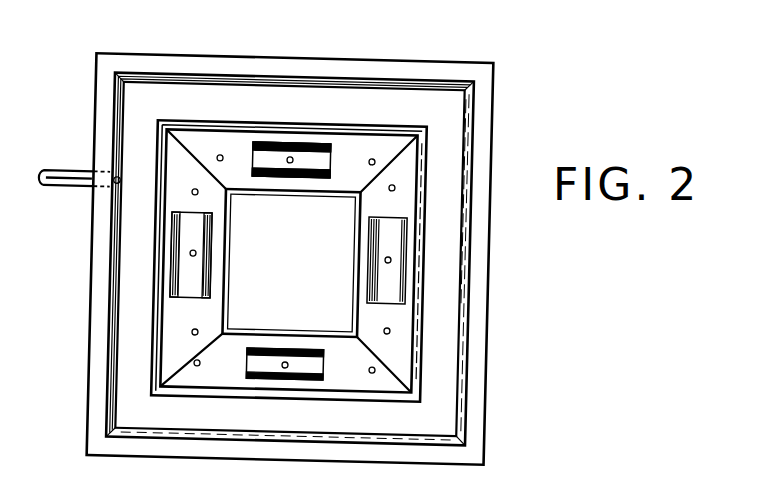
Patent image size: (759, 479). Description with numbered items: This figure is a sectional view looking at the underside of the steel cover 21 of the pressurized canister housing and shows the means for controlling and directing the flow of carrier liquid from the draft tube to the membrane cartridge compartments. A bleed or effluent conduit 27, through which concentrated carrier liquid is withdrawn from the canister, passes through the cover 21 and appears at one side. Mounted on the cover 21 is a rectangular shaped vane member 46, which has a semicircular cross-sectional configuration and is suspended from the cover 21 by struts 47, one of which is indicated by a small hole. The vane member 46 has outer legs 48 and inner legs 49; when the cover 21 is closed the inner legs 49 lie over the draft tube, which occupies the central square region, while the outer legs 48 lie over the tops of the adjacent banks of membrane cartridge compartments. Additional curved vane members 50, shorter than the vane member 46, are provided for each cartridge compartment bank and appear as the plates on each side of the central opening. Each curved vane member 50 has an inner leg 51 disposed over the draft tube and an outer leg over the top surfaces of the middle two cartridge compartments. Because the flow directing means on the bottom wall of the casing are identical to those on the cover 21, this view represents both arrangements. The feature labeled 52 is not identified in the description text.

The steel cover 21 is at (493, 111).
The bleed or effluent conduit 27 is at (50, 168).
The rectangular shaped vane member 46 is at (429, 255).
The struts 47 is at (384, 328).
The outer legs 48 is at (338, 126).
The inner legs 49 is at (320, 191).
The curved vane members 50 is at (335, 158).
The inner leg 51 is at (270, 177).
The slot 52 is at (275, 141).